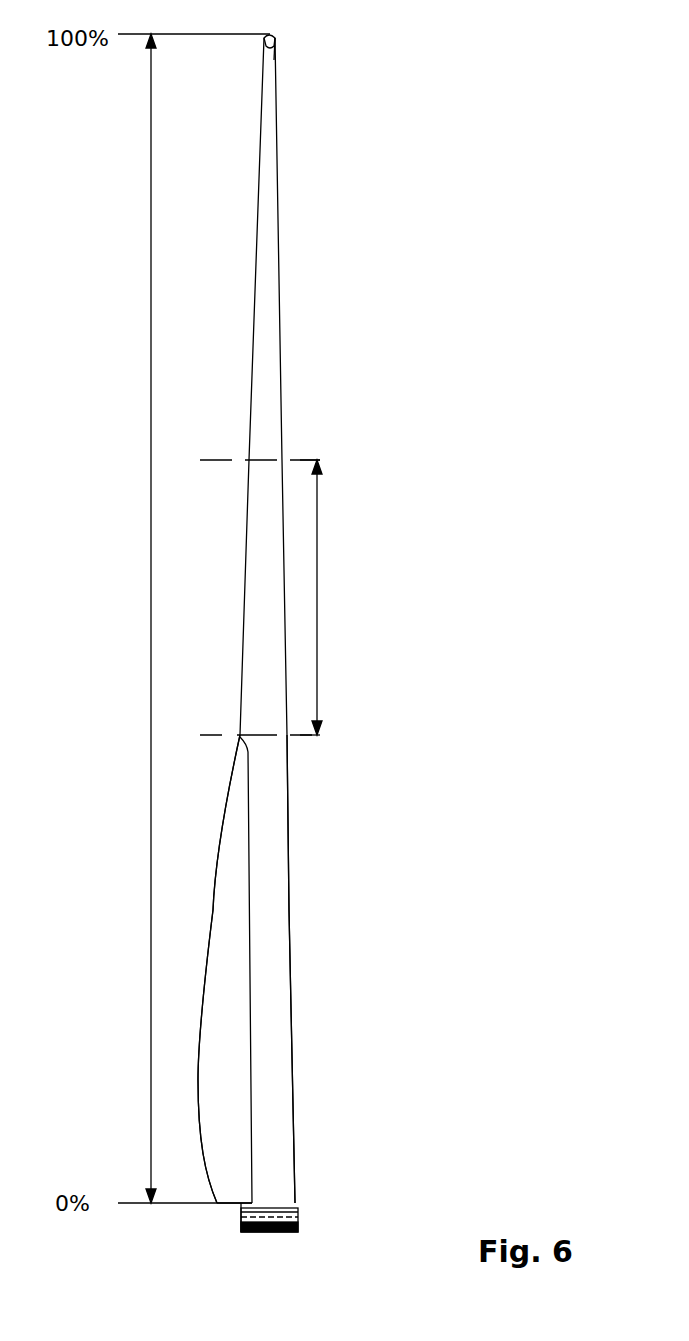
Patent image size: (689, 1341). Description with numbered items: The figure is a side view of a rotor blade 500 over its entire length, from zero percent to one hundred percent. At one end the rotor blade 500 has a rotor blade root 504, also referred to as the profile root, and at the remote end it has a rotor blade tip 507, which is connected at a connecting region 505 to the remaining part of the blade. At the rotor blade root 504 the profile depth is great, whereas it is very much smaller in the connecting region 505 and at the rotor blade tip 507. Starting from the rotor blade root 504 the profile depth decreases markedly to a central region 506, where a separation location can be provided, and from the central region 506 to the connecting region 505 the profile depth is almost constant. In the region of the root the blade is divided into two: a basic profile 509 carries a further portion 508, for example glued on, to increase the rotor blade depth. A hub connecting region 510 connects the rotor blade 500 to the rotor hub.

The rotor blade 500 is at (380, 179).
The rotor blade root 504 is at (240, 1230).
The connecting region 505 is at (275, 46).
The central region 506 is at (317, 597).
The rotor blade tip 507 is at (272, 36).
The further portion 508 is at (233, 1085).
The basic profile 509 is at (268, 935).
The hub connecting region 510 is at (300, 1226).